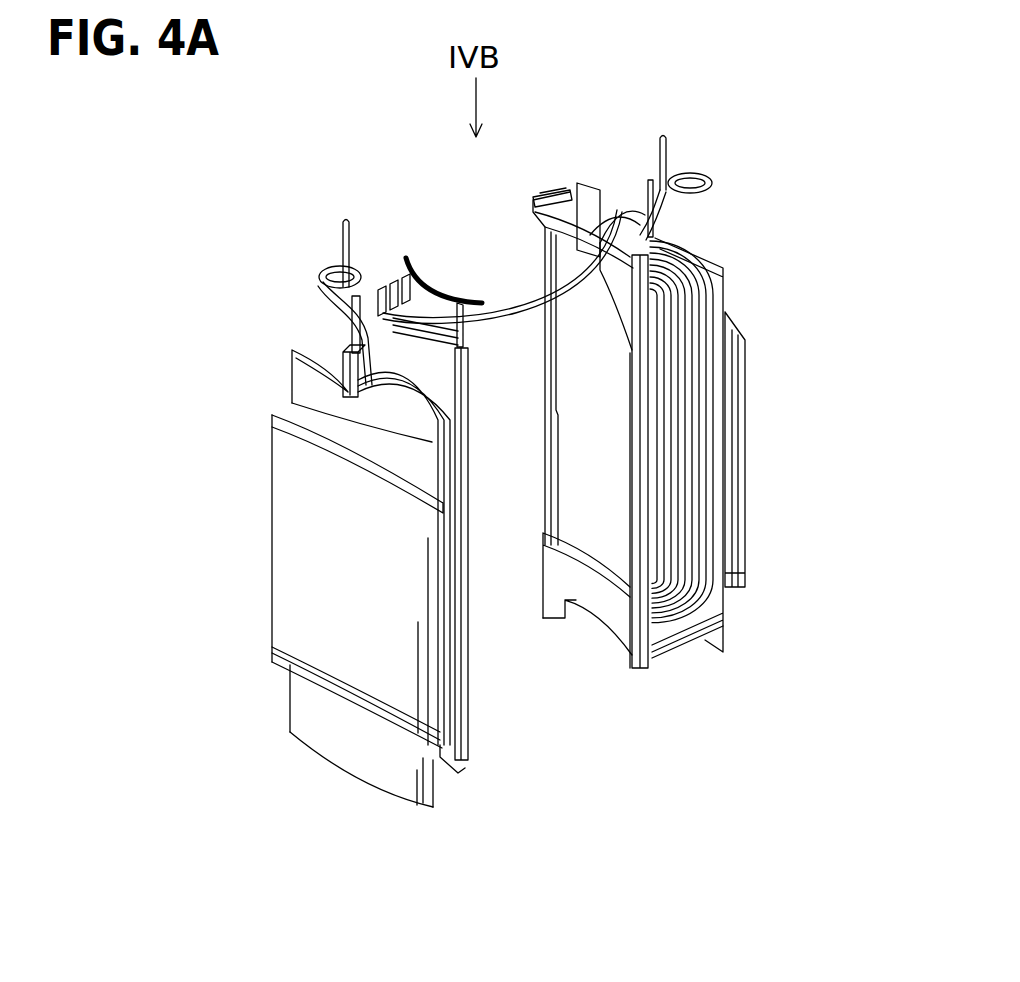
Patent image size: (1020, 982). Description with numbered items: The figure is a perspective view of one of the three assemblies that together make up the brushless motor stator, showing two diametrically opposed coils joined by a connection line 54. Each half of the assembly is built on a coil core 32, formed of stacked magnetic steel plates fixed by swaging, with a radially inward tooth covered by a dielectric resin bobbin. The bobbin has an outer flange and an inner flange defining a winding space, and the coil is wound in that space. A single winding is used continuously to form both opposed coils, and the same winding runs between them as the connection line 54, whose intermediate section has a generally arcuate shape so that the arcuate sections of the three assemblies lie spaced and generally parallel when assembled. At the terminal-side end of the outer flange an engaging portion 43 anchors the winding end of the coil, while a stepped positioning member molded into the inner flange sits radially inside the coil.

The coil core 32 is at (295, 597).
The engaging portion 43 is at (340, 378).
The connection line 54 is at (515, 320).